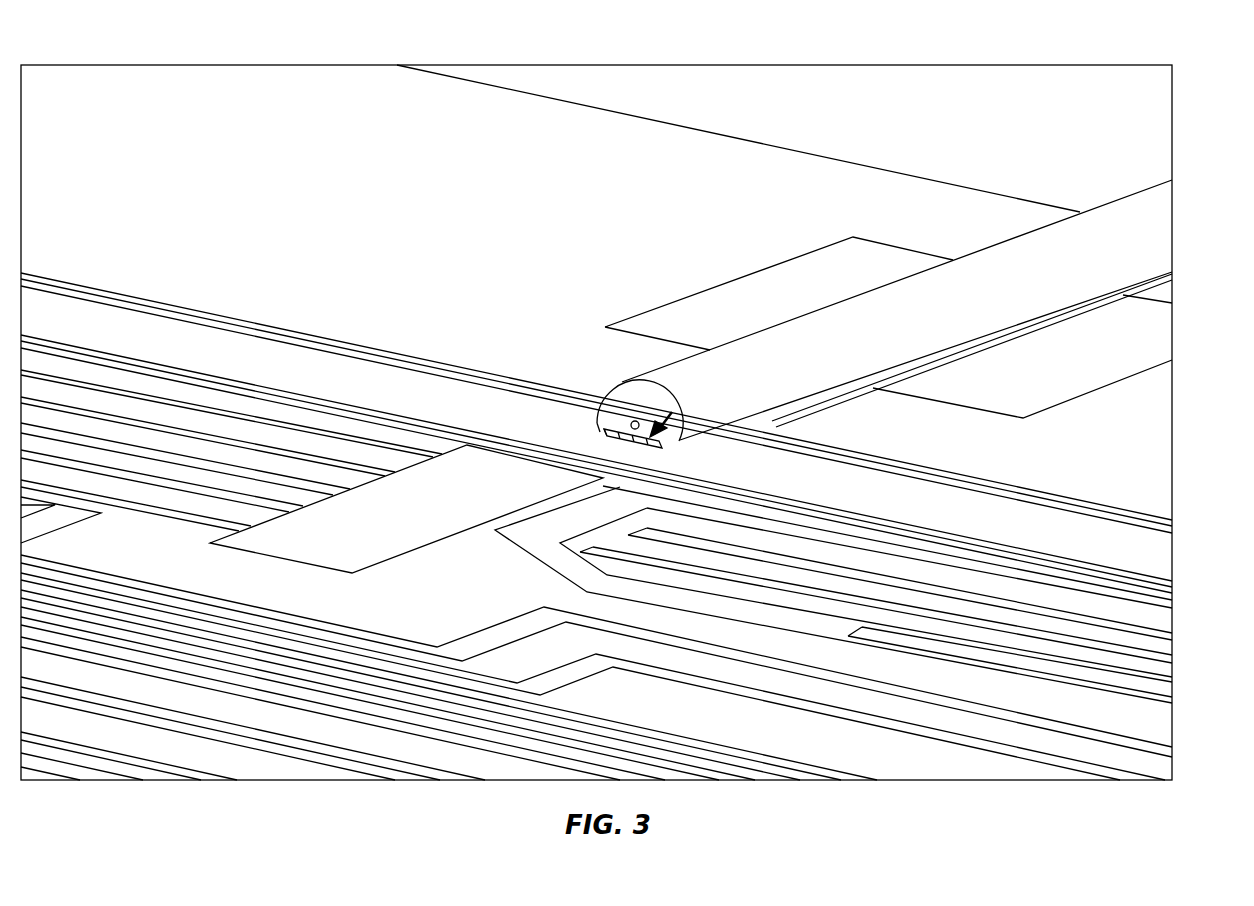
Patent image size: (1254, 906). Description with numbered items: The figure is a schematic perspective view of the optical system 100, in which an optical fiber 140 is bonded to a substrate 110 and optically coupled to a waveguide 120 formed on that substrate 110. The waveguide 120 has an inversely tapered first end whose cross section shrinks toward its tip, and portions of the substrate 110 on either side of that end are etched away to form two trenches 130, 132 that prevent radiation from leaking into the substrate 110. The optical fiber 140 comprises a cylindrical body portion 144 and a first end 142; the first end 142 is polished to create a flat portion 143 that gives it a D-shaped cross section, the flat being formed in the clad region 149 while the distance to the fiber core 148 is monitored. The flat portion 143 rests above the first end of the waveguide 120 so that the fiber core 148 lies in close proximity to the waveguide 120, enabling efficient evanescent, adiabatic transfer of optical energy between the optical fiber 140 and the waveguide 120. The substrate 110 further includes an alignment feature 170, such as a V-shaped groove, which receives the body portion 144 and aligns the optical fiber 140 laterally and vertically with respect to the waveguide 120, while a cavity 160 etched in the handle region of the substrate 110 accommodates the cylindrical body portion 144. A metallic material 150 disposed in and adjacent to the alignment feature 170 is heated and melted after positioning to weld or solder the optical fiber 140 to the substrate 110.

The optical system 100 is at (330, 48).
The substrate 110 is at (1160, 476).
The waveguide 120 is at (572, 462).
The trench 130 is at (606, 432).
The trench 132 is at (648, 442).
The optical fiber 140 is at (1137, 212).
The first end 142 is at (677, 387).
The flat portion 143 is at (736, 414).
The body portion 144 is at (968, 325).
The fiber core 148 is at (595, 400).
The clad region 149 is at (633, 403).
The metallic material 150 is at (790, 280).
The cavity 160 is at (855, 436).
The alignment feature 170 is at (867, 390).